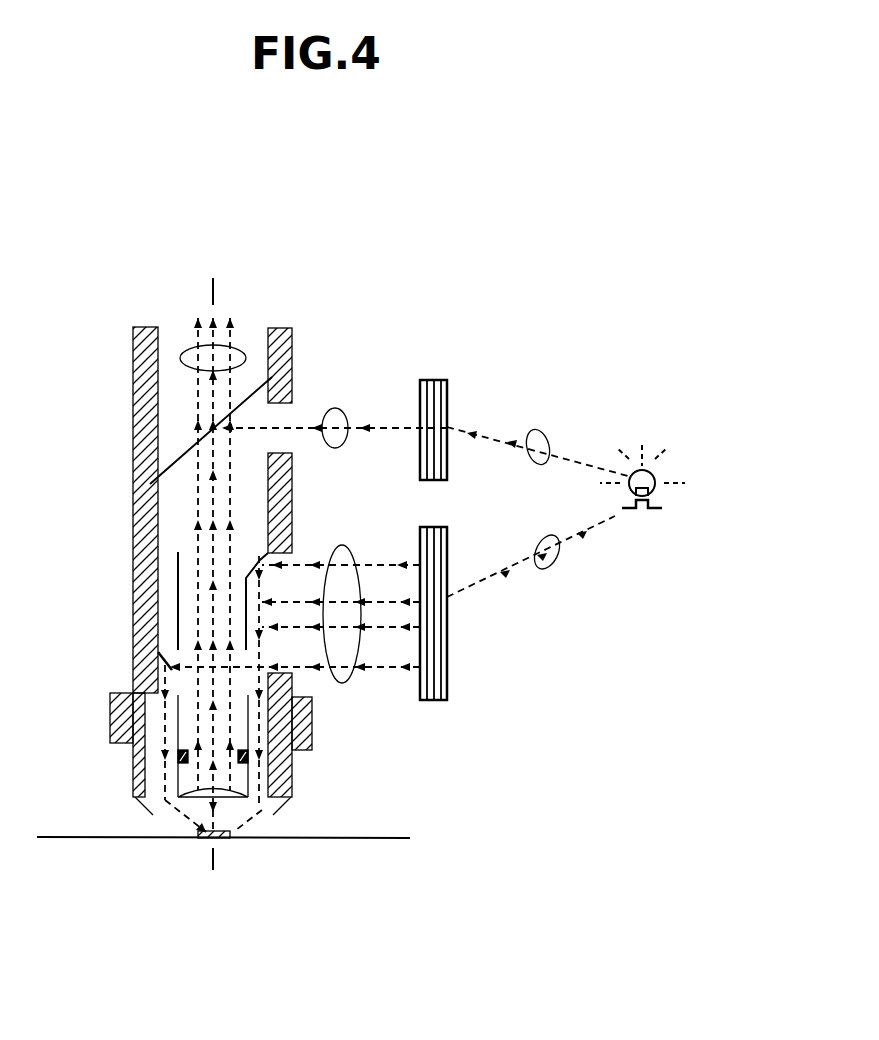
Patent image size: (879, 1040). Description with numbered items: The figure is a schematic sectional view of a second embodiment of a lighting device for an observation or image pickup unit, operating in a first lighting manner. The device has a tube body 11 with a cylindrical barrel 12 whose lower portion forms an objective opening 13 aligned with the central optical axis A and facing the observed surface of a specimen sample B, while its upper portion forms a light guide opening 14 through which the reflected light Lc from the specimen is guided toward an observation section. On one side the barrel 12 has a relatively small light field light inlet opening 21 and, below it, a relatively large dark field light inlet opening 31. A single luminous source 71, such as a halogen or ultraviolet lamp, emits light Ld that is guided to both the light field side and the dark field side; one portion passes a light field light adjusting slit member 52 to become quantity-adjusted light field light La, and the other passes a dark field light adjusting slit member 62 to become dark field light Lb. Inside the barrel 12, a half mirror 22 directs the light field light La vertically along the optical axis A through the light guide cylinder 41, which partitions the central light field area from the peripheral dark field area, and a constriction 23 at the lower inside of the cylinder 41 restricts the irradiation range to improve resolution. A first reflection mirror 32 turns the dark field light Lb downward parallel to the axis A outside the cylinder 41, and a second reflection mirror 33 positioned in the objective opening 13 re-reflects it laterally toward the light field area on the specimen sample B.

The tube body 11 is at (126, 355).
The cylindrical barrel 12 is at (133, 462).
The objective opening 13 is at (160, 828).
The light guide opening 14 is at (248, 330).
The light field light inlet opening 21 is at (292, 438).
The half mirror 22 is at (187, 440).
The constriction 23 is at (250, 757).
The dark field light inlet opening 31 is at (285, 582).
The first reflection mirror 32 is at (163, 656).
The second reflection mirror 33 is at (292, 811).
The light guide cylinder 41 is at (178, 603).
The light field light adjusting slit member 52 is at (447, 480).
The dark field light adjusting slit member 62 is at (432, 700).
The luminous source 71 is at (627, 508).
The optical axis A is at (212, 580).
The specimen sample B is at (218, 840).
The light field light La is at (335, 410).
The dark field light Lb is at (350, 683).
The reflected light Lc is at (195, 350).
The light for illumination Ld is at (535, 465).